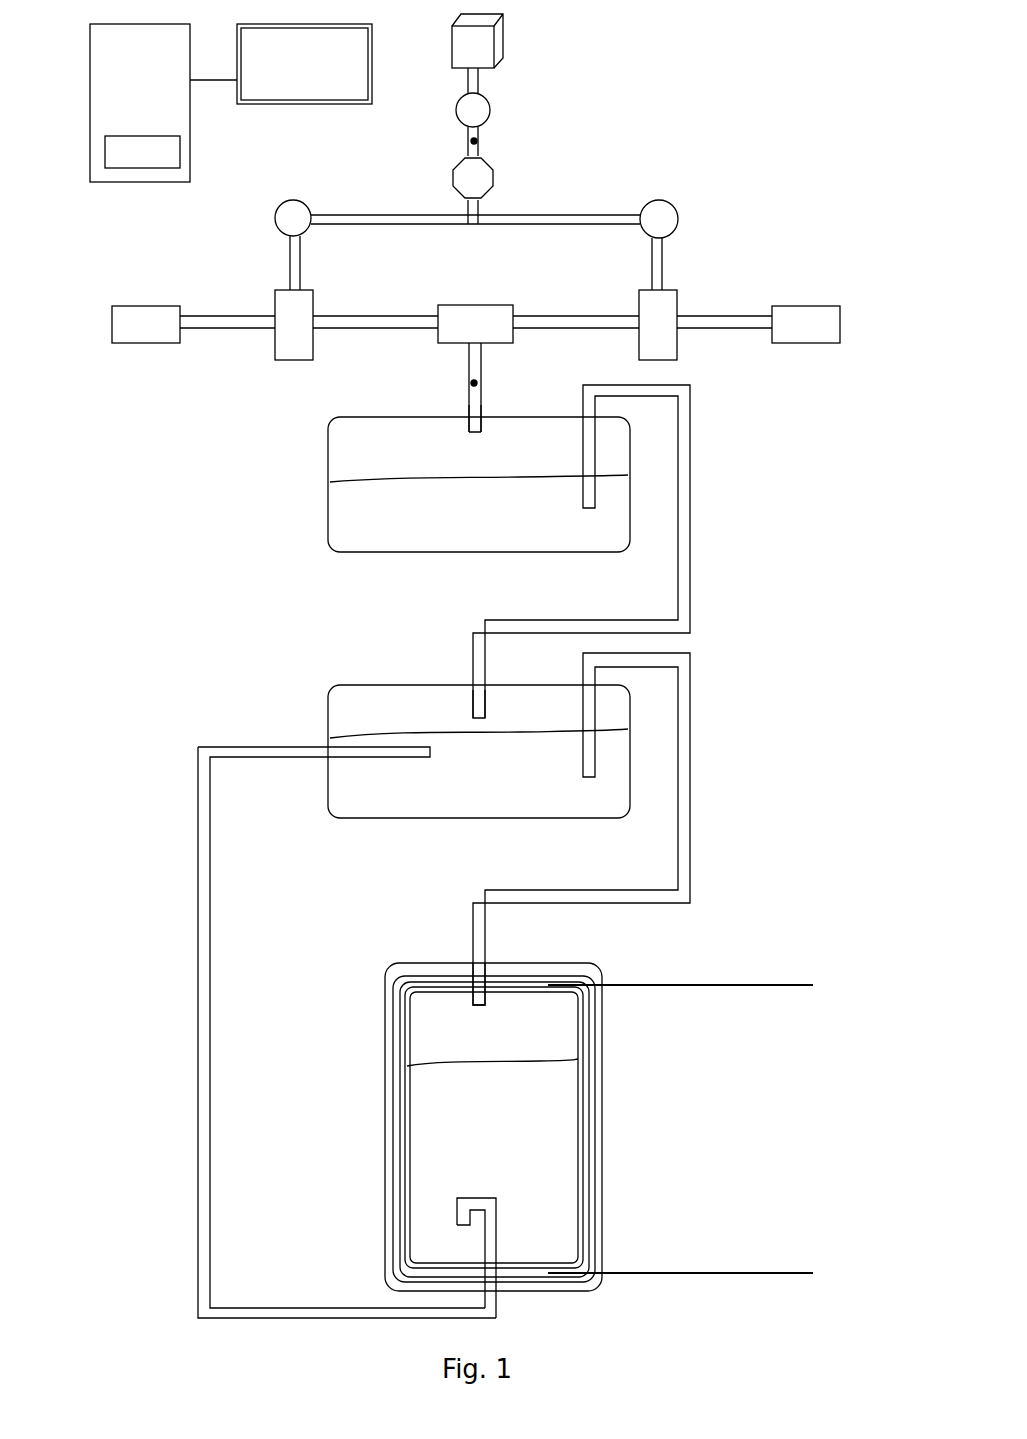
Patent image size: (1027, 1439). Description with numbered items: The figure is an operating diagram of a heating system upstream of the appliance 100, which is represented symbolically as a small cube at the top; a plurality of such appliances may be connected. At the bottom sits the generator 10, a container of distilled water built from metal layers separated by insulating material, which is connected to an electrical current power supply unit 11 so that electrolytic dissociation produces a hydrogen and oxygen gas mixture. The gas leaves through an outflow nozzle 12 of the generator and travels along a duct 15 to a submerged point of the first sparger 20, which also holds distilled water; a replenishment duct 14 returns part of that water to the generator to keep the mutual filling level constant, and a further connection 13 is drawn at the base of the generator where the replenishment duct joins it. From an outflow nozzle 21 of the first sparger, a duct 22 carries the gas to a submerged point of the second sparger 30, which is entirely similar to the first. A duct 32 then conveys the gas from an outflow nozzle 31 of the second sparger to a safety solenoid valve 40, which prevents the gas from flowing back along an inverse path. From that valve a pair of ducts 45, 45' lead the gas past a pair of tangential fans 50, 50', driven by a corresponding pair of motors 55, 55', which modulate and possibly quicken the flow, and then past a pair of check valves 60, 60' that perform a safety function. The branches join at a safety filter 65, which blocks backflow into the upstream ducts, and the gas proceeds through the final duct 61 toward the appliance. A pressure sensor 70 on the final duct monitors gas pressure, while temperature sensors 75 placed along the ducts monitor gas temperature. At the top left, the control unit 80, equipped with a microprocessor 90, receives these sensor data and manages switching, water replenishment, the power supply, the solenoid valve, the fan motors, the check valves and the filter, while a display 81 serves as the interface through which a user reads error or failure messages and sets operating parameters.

The generator 10 is at (600, 1140).
The electrical current power supply unit 11 is at (735, 985).
The outflow nozzle 12 is at (482, 992).
The electrolyzer water inlet 13 is at (496, 1255).
The replenishment duct 14 is at (205, 1160).
The duct for the outflow of the gas 15 is at (473, 930).
The first sparger 20 is at (328, 700).
The outflow nozzle 21 is at (475, 690).
The duct for the outflow of the gas 22 is at (690, 512).
The second sparger 30 is at (328, 495).
The outflow nozzle 31 is at (468, 416).
The duct for the outflow of the gas 32 is at (468, 365).
The safety solenoid valve 40 is at (475, 324).
The duct 45 is at (266, 261).
The duct 45' is at (670, 259).
The tangential fan 50 is at (294, 325).
The tangential fan 50' is at (658, 325).
The motor 55 is at (146, 324).
The motor 55' is at (806, 324).
The check valve 60 is at (293, 245).
The check valve 60' is at (659, 245).
The final duct 61 is at (531, 222).
The safety filter 65 is at (473, 191).
The pressure sensor 70 is at (473, 112).
The temperature sensor 75 is at (478, 141).
The control unit 80 is at (90, 70).
The display 81 is at (291, 78).
The microprocessor 90 is at (105, 150).
The appliance 100 is at (477, 41).